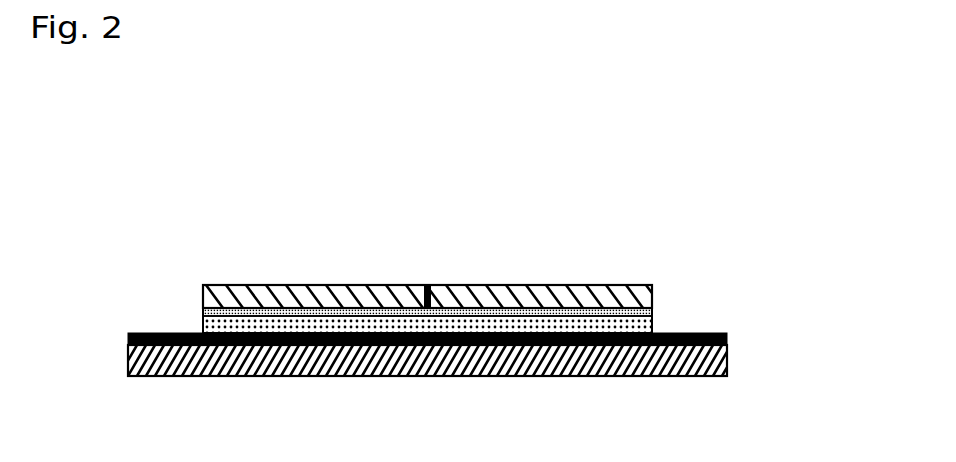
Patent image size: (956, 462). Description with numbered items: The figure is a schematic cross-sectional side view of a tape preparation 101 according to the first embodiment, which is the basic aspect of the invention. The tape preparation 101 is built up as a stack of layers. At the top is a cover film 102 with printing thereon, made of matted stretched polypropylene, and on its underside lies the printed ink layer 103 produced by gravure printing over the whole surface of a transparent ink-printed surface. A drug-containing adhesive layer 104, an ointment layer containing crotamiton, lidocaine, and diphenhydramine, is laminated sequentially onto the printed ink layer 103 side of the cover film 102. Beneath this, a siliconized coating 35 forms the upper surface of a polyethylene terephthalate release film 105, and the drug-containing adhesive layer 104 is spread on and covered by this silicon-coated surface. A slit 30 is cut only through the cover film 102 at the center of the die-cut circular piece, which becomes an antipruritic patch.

The tape preparation 101 is at (393, 228).
The cover film 102 is at (267, 298).
The slit 30 is at (433, 285).
The printed ink layer 103 is at (650, 310).
The drug-containing adhesive layer 104 is at (640, 326).
The siliconized coating 35 is at (143, 333).
The release film 105 is at (688, 367).